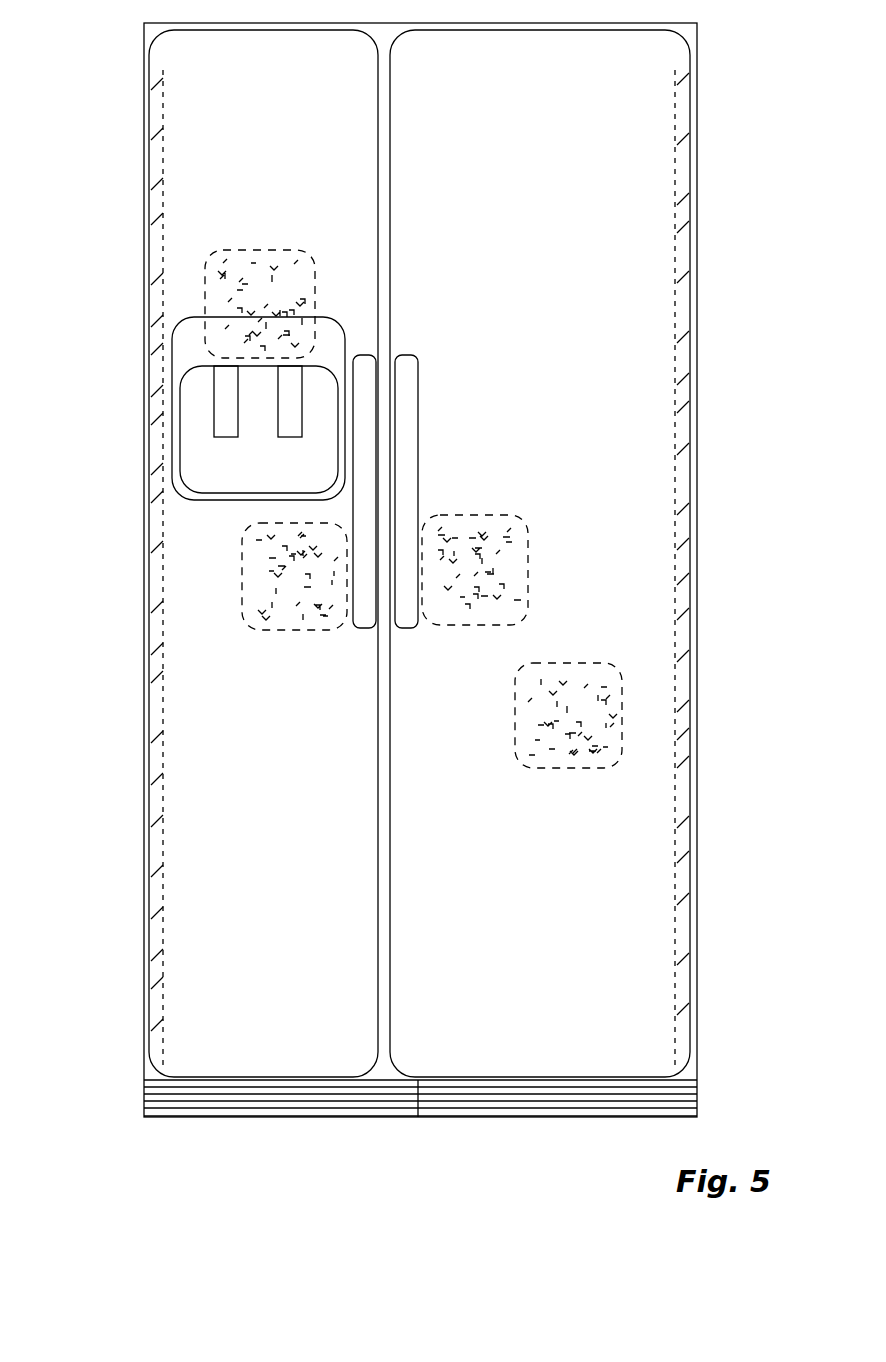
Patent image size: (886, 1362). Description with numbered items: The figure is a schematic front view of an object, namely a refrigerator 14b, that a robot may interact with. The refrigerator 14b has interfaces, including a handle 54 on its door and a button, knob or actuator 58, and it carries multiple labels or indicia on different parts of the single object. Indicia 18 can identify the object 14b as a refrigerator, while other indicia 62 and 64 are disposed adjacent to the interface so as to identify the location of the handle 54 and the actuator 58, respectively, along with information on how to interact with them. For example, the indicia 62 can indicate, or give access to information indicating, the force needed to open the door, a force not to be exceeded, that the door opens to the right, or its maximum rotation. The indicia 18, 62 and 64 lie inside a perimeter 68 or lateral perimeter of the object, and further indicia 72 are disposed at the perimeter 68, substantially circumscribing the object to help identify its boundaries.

The refrigerator 14b is at (471, 1053).
The indicia 18 is at (585, 720).
The handle 54 is at (410, 443).
The actuator 58 is at (222, 418).
The indicia 62 is at (522, 567).
The indicia 64 is at (245, 286).
The perimeter 68 is at (690, 247).
The indicia 72 is at (680, 393).